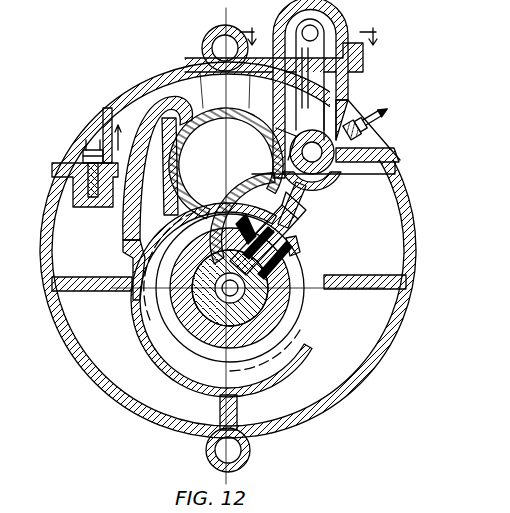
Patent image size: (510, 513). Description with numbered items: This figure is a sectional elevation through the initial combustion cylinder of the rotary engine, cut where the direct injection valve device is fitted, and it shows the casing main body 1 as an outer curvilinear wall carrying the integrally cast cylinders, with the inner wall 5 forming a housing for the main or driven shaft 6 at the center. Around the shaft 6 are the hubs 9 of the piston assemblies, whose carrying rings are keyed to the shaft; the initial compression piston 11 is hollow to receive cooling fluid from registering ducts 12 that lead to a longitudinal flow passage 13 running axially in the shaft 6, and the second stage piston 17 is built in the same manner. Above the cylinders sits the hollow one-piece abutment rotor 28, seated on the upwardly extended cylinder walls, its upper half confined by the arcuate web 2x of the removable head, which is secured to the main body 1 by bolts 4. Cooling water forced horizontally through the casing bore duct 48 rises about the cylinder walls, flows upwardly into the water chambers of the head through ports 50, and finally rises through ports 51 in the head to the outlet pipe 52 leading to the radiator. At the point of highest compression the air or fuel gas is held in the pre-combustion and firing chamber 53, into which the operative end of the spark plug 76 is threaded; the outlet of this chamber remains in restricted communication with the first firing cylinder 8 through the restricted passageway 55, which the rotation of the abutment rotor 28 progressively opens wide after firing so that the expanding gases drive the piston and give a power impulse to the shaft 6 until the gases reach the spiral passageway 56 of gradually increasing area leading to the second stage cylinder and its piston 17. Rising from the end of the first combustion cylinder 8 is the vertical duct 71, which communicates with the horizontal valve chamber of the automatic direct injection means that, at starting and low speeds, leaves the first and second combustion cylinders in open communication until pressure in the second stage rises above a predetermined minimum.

The main body 1 is at (410, 248).
The arcuate web 2x is at (138, 87).
The bolts 4 is at (83, 153).
The inner wall 5 is at (308, 348).
The main or driven shaft 6 is at (170, 345).
The first firing cylinder 8 is at (305, 250).
The hubs 9 is at (206, 276).
The initial compression piston 11 is at (313, 25).
The registering ducts 12 is at (338, 20).
The longitudinal flow passage 13 is at (175, 297).
The second stage piston 17 is at (300, 218).
The abutment rotor 28 is at (242, 116).
The casing bore duct 48 is at (252, 450).
The ports 50 is at (113, 200).
The ports 51 is at (225, 89).
The outlet pipe 52 is at (203, 46).
The pre-combustion and firing chamber 53 is at (340, 178).
The restricted passageway 55 is at (284, 189).
The spiral passageway 56 is at (154, 198).
The vertical duct 71 is at (316, 97).
The spark plug 76 is at (358, 133).